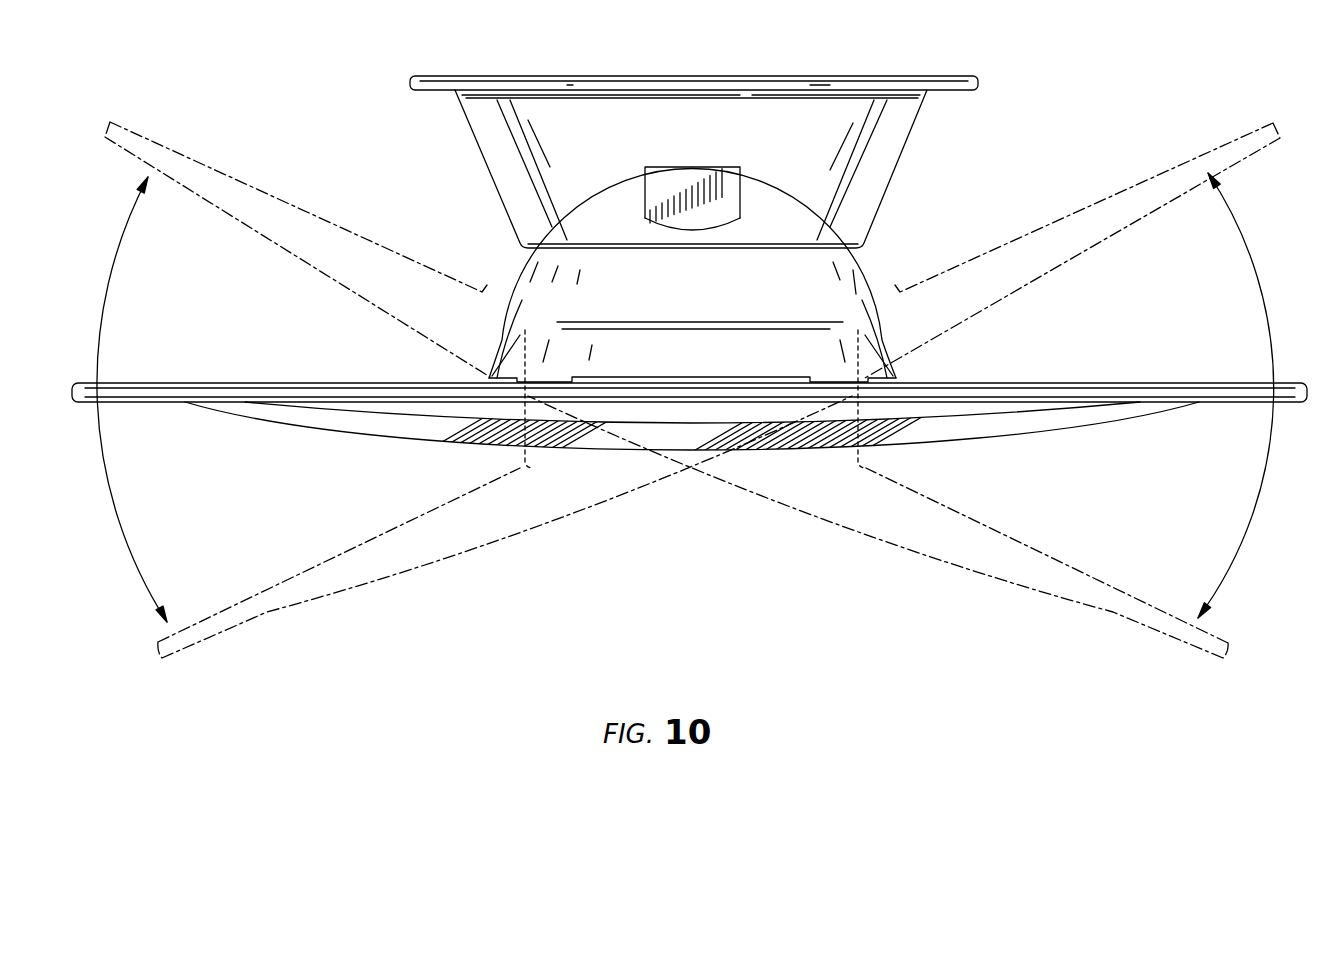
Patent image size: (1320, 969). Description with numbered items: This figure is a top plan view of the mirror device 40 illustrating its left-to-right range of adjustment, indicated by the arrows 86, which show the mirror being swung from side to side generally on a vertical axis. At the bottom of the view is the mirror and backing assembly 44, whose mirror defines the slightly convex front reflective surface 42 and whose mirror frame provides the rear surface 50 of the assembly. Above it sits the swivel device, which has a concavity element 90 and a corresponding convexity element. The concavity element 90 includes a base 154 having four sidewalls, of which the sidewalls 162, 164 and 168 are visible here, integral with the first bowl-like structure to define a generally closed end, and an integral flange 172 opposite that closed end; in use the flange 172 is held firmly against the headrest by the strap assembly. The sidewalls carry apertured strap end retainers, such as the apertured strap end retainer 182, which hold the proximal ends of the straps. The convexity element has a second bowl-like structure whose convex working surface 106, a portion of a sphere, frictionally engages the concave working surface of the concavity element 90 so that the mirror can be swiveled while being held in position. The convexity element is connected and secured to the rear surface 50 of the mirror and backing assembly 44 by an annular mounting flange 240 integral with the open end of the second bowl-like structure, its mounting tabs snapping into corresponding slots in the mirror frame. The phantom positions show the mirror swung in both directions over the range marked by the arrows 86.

The mirror device 40 is at (247, 82).
The front reflective surface 42 is at (960, 440).
The mirror and backing assembly 44 is at (66, 402).
The rear surface 50 is at (410, 383).
The arrows 86 is at (1262, 283).
The concavity element 90 is at (1015, 124).
The convex working surface 106 is at (866, 272).
The base 154 is at (486, 162).
The sidewall 162 is at (743, 115).
The sidewall 164 is at (497, 190).
The sidewall 168 is at (893, 180).
The flange 172 is at (427, 77).
The apertured strap end retainer 182 is at (730, 203).
The annular mounting flange 240 is at (883, 352).